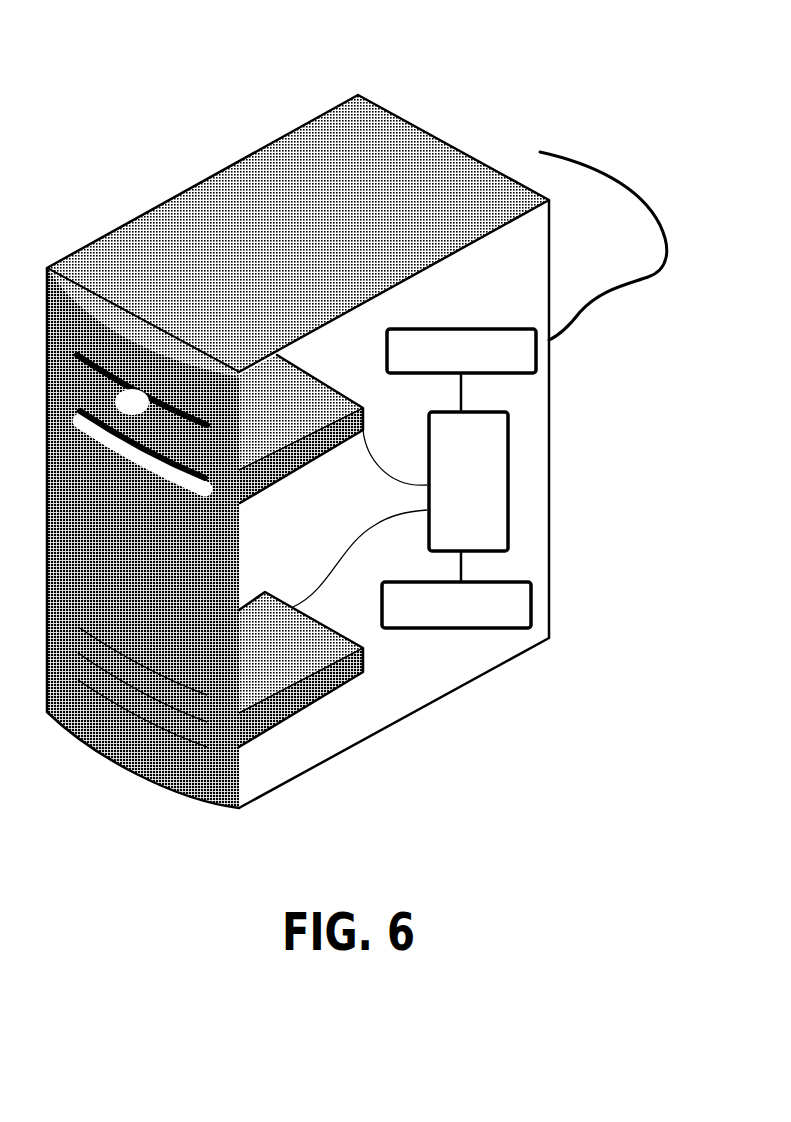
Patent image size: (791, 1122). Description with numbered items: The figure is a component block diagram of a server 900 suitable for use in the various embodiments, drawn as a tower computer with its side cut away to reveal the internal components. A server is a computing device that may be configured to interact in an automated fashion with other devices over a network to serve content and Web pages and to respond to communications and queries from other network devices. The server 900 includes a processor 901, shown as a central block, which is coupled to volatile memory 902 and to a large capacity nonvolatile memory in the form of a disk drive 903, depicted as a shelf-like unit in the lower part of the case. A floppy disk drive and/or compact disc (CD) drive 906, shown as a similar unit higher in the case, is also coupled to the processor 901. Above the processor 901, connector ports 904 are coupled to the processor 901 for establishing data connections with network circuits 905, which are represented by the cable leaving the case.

The server 900 is at (357, 96).
The processor 901 is at (486, 494).
The volatile memory 902 is at (476, 616).
The disk drive 903 is at (363, 665).
The connector ports 904 is at (479, 363).
The network circuits 905 is at (616, 287).
The compact disc (CD) drive 906 is at (312, 462).